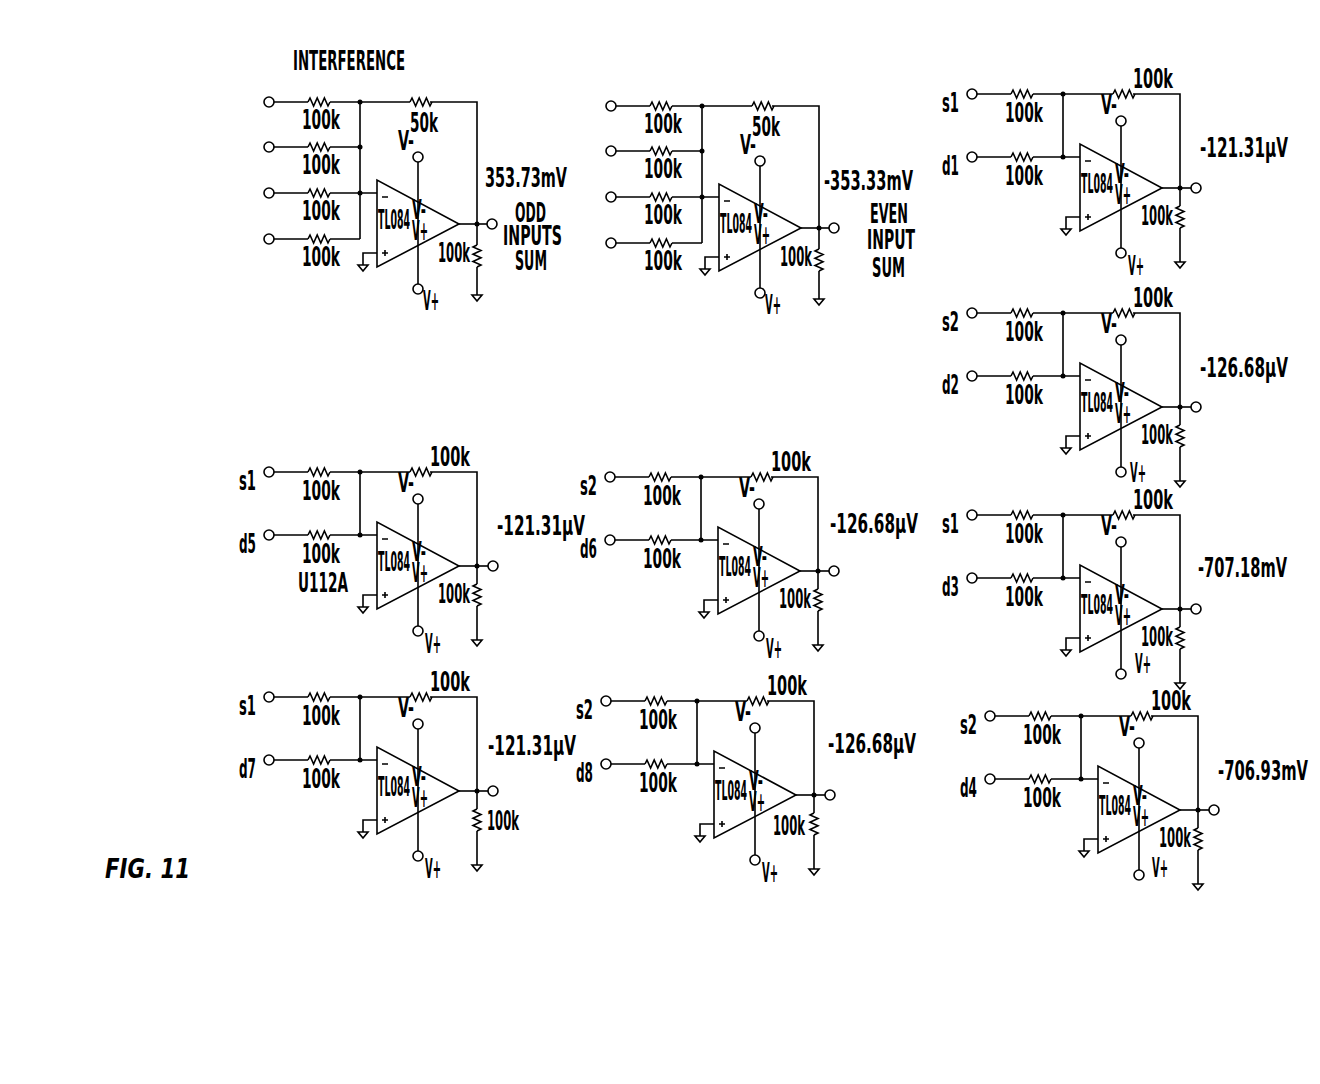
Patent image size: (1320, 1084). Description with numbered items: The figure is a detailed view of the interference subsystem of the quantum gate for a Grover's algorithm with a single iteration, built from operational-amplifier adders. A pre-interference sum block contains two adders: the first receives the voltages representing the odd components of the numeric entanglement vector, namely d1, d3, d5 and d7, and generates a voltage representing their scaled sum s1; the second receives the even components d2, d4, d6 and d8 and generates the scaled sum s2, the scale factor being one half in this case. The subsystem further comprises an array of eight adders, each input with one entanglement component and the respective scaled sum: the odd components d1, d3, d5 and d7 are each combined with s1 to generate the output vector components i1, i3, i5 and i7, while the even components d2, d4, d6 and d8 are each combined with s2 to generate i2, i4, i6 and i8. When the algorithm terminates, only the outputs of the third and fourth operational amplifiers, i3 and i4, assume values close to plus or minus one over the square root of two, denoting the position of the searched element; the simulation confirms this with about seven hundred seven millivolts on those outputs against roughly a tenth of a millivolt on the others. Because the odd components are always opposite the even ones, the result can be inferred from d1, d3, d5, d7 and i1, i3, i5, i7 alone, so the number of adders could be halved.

The entanglement vector component d1 is at (299, 111).
The entanglement vector component d2 is at (641, 115).
The entanglement vector component d3 is at (299, 156).
The entanglement vector component d4 is at (641, 160).
The entanglement vector component d5 is at (299, 202).
The entanglement vector component d6 is at (641, 206).
The entanglement vector component d7 is at (299, 248).
The entanglement vector component d8 is at (641, 252).
The scaled sum of odd components s1 is at (481, 209).
The scaled sum of even components s2 is at (823, 214).
The output vector component i1 is at (1185, 174).
The output vector component i2 is at (1185, 393).
The output vector component i3 is at (1185, 595).
The output vector component i4 is at (1203, 796).
The output vector component i5 is at (482, 552).
The output vector component i6 is at (823, 557).
The output vector component i7 is at (482, 777).
The output vector component i8 is at (819, 781).